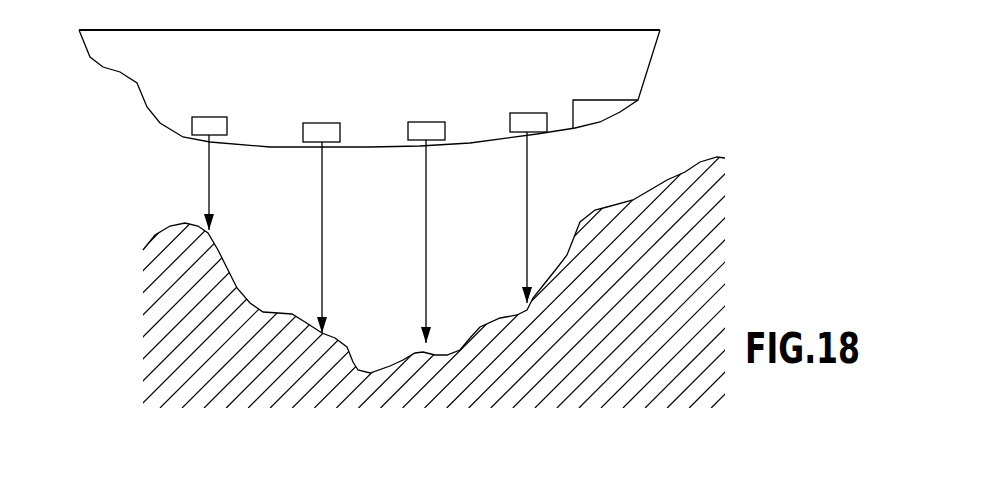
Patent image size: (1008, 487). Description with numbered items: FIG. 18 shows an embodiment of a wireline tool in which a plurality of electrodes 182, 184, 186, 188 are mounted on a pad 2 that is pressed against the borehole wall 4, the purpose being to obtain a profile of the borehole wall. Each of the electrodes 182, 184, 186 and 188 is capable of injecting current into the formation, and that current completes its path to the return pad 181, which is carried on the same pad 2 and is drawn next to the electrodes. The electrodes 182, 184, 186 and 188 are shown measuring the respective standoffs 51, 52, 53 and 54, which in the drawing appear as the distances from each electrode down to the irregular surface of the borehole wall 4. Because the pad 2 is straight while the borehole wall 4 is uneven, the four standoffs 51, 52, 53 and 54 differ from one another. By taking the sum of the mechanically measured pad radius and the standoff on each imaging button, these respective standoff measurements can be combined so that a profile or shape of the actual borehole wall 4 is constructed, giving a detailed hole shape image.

The vessel hull 2 is at (590, 178).
The seabed / ground 4 is at (722, 158).
The return pad 181 is at (600, 110).
The electrode 182 is at (528, 120).
The electrode 184 is at (427, 129).
The electrode 186 is at (322, 130).
The electrode 188 is at (210, 122).
The measurement beam 51 is at (528, 203).
The measurement beam 52 is at (427, 238).
The measurement beam 53 is at (322, 228).
The measurement beam 54 is at (210, 190).